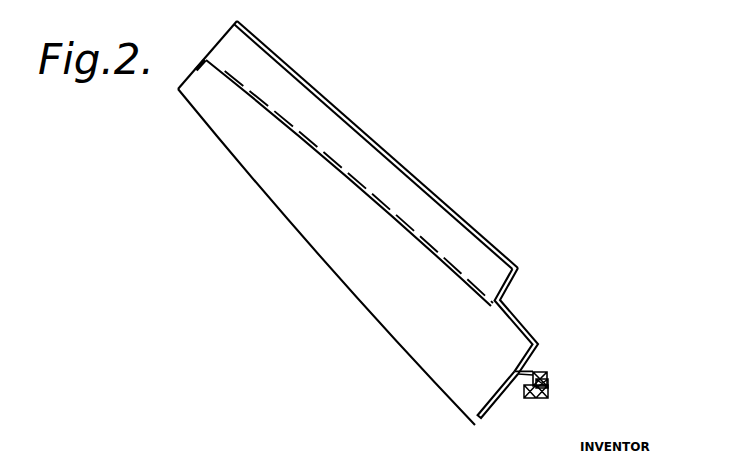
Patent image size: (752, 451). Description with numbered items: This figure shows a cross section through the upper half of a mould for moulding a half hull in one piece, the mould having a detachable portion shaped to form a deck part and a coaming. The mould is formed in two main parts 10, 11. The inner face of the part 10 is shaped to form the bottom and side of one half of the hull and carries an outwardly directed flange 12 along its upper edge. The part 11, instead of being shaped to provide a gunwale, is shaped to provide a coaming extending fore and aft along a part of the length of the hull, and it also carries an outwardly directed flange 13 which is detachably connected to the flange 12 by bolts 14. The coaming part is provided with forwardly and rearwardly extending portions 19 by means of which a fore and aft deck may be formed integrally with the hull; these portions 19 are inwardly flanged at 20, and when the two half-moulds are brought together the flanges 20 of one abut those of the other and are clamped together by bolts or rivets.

The mould main part 10 is at (492, 410).
The mould main part 11 is at (512, 322).
The outwardly directed flange 12 is at (545, 398).
The outwardly directed flange 13 is at (548, 380).
The bolts 14 is at (541, 372).
The forwardly and rearwardly extending portions 19 is at (380, 210).
The inward flanges 20 is at (200, 72).